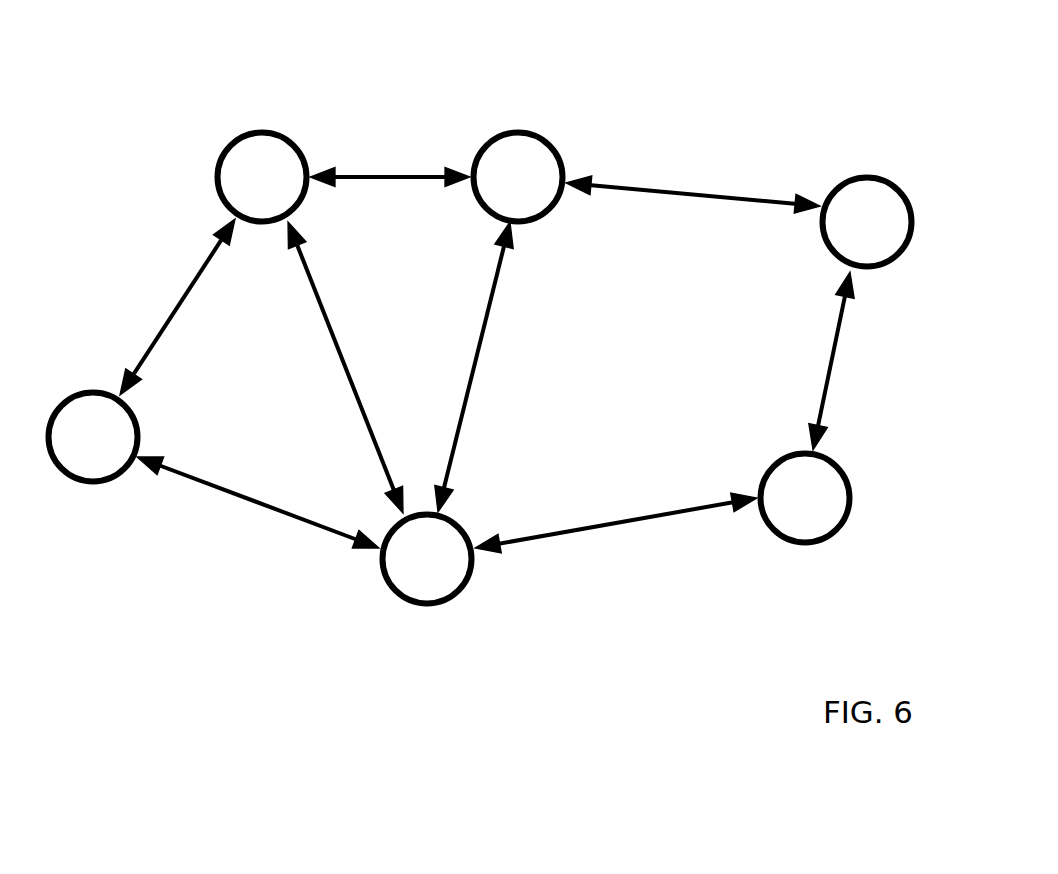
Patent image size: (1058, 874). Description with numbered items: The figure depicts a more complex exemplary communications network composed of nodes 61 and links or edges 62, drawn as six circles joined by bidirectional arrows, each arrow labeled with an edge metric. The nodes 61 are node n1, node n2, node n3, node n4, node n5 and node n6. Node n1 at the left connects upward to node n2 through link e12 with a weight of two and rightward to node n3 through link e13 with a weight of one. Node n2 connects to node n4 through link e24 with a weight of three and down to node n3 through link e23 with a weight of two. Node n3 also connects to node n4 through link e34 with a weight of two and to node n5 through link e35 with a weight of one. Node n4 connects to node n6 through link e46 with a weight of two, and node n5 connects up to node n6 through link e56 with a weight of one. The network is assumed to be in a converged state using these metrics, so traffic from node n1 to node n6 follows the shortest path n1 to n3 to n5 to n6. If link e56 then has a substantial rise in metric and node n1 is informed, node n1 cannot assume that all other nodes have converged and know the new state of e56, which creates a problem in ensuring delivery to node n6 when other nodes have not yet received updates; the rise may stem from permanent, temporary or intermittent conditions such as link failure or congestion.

The nodes 61 is at (480, 358).
The links 62 is at (495, 345).
The node n1 is at (93, 437).
The node n2 is at (262, 177).
The node n3 is at (427, 559).
The node n4 is at (518, 177).
The node n5 is at (805, 498).
The node n6 is at (867, 222).
The link e12 is at (159, 307).
The link e24 is at (390, 149).
The link e46 is at (693, 170).
The link e23 is at (342, 367).
The link e34 is at (497, 367).
The link e13 is at (258, 518).
The link e35 is at (616, 504).
The link e56 is at (858, 361).